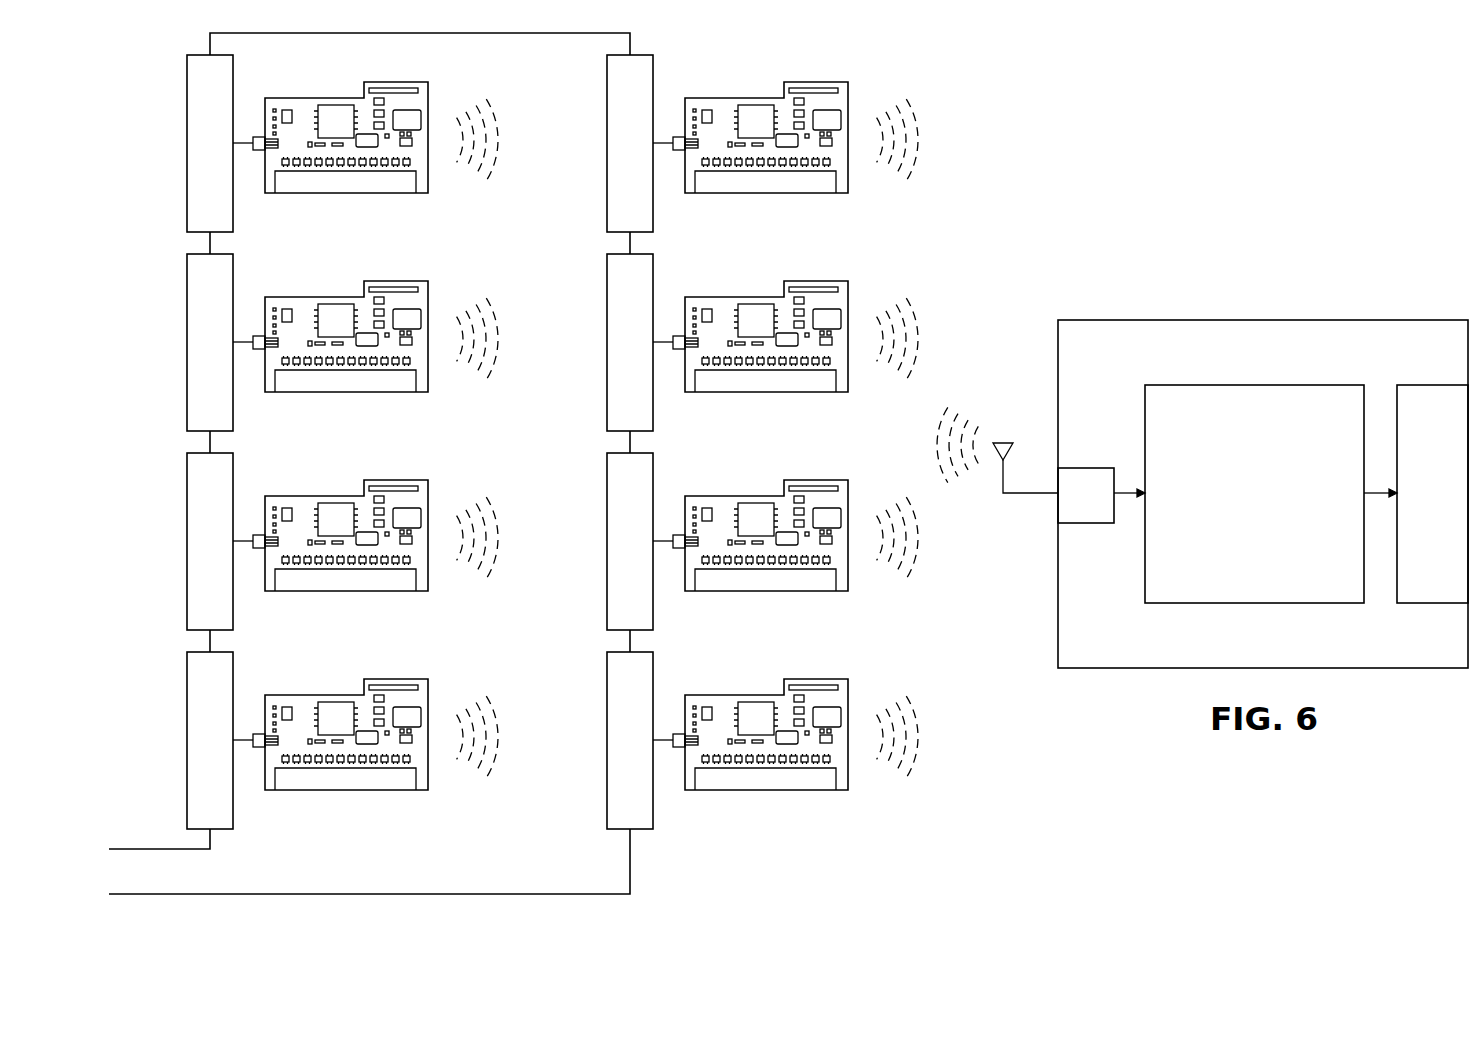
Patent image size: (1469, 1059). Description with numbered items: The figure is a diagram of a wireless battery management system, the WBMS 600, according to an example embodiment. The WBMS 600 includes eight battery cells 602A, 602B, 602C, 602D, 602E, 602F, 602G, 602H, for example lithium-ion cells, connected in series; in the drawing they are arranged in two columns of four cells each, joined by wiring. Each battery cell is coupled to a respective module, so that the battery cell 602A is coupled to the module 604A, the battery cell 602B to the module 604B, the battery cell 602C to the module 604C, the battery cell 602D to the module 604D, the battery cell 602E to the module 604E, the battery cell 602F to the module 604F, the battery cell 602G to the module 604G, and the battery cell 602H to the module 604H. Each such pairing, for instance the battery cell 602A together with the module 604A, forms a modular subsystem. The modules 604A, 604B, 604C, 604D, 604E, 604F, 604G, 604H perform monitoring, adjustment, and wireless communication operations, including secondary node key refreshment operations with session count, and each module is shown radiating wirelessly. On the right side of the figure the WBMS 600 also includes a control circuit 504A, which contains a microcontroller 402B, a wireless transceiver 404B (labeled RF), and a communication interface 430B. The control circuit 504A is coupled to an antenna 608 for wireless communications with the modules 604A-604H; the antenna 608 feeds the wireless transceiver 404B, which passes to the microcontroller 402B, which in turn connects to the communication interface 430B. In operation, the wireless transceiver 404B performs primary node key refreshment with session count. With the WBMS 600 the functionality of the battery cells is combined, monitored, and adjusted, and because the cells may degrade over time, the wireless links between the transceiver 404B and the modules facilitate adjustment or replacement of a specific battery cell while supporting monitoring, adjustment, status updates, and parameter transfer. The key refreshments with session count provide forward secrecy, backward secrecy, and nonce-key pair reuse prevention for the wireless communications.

The WBMS 600 is at (1024, 97).
The battery cell 602A is at (187, 750).
The battery cell 602B is at (187, 550).
The battery cell 602C is at (187, 332).
The battery cell 602D is at (187, 132).
The battery cell 602E is at (607, 132).
The battery cell 602F is at (607, 332).
The battery cell 602G is at (607, 550).
The battery cell 602H is at (607, 750).
The module 604A is at (345, 790).
The module 604B is at (345, 591).
The module 604C is at (345, 392).
The module 604D is at (345, 193).
The module 604E is at (765, 193).
The module 604F is at (765, 392).
The module 604G is at (765, 591).
The module 604H is at (765, 790).
The antenna 608 is at (1005, 441).
The wireless transceiver 404B is at (1095, 468).
The control circuit 504A is at (1288, 368).
The microcontroller 402B is at (1283, 526).
The communication interface 430B is at (1430, 385).